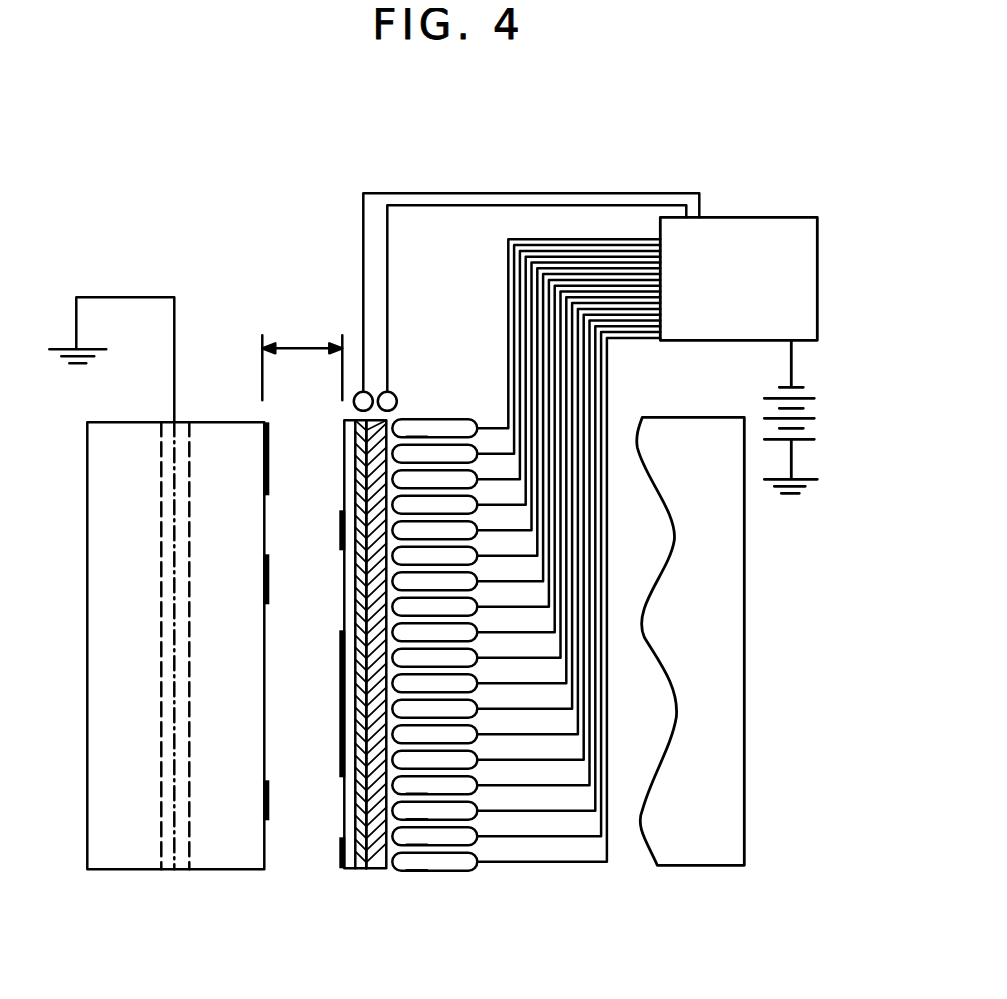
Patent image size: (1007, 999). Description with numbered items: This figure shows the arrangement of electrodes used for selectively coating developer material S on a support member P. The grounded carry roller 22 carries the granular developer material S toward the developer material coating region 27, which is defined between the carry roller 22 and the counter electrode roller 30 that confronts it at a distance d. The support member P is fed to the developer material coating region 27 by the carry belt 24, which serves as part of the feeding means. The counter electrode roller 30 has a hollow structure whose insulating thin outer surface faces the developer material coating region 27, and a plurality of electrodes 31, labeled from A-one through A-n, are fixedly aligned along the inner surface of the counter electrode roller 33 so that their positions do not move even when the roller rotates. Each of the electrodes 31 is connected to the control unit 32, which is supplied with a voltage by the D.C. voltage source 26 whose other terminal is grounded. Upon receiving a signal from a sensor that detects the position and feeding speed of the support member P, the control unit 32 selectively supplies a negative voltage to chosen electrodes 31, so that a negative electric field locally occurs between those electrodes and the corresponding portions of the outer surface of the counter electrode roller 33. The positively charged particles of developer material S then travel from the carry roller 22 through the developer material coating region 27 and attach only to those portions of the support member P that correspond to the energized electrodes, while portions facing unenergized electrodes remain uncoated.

The carry roller 22 is at (130, 874).
The carry belt 24 is at (363, 873).
The D.C. voltage source 26 is at (818, 408).
The developer material coating region 27 is at (339, 690).
The counter electrode roller 30 is at (706, 853).
The electrodes 31 is at (458, 422).
The control unit 32 is at (775, 232).
The counter electrode roller 33 is at (446, 400).
The developer material S is at (345, 848).
The support member p is at (352, 873).
The distance d is at (302, 360).